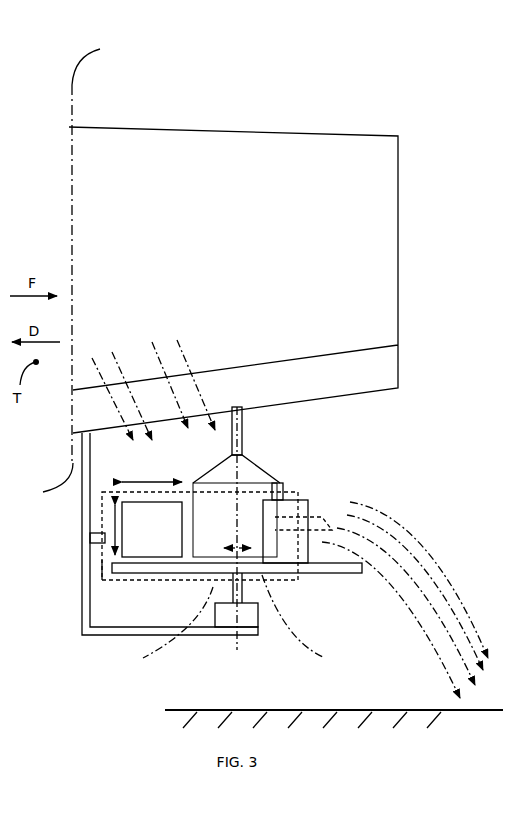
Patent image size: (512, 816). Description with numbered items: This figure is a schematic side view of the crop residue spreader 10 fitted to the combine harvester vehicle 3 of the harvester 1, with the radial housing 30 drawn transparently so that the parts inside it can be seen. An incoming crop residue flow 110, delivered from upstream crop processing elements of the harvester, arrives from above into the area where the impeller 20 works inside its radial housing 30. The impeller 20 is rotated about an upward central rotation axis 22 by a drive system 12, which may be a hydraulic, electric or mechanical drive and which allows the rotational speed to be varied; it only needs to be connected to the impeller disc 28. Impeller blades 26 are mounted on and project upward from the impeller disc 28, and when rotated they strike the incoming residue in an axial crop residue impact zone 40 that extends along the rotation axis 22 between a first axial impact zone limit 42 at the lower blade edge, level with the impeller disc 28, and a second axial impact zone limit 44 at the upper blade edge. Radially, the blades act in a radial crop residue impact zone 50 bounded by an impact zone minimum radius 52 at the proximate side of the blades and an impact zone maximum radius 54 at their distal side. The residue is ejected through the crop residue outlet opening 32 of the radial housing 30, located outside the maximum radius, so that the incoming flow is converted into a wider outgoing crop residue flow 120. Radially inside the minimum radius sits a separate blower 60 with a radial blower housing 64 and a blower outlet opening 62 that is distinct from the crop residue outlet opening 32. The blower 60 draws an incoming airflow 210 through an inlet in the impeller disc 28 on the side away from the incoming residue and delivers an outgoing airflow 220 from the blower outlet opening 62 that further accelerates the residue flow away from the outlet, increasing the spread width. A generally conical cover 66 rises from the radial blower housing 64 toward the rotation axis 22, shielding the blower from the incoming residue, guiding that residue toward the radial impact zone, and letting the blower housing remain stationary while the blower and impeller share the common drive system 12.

The harvester 1 is at (160, 102).
The combine harvester vehicle 3 is at (256, 146).
The crop residue spreader 10 is at (328, 442).
The drive system 12 is at (253, 622).
The impeller 20 is at (152, 547).
The rotation axis 22 is at (240, 416).
The impeller blades 26 is at (158, 568).
The impeller disc 28 is at (185, 566).
The radial housing 30 is at (112, 588).
The crop residue outlet opening 32 is at (355, 545).
The axial crop residue impact zone 40 is at (100, 524).
The first axial impact zone limit 42 is at (104, 562).
The second axial impact zone limit 44 is at (106, 502).
The radial crop residue impact zone 50 is at (162, 478).
The impact zone minimum radius 52 is at (182, 470).
The impact zone maximum radius 54 is at (123, 470).
The blower 60 is at (256, 448).
The blower outlet opening 62 is at (289, 492).
The radial blower housing 64 is at (264, 494).
The cover 66 is at (254, 474).
The incoming crop residue flow 110 is at (187, 348).
The outgoing crop residue flow 120 is at (404, 502).
The incoming airflow 210 is at (300, 646).
The outgoing airflow 220 is at (324, 514).